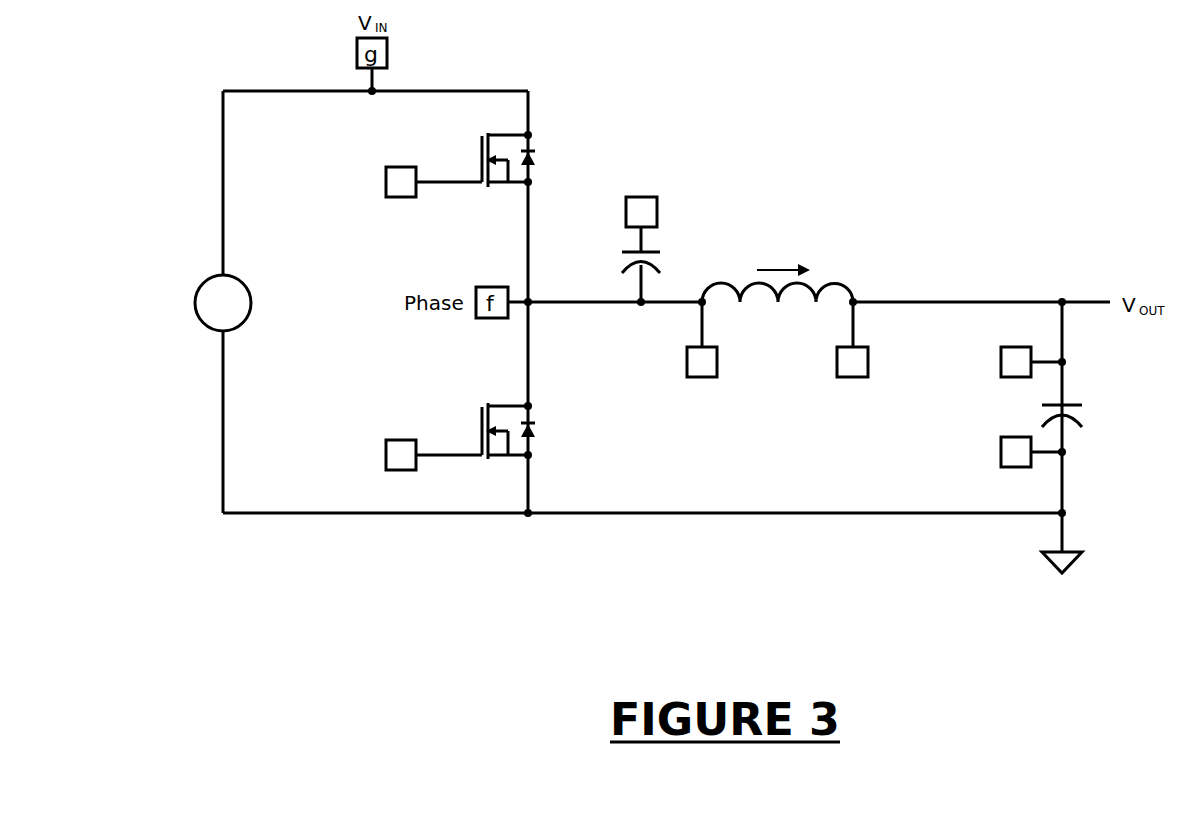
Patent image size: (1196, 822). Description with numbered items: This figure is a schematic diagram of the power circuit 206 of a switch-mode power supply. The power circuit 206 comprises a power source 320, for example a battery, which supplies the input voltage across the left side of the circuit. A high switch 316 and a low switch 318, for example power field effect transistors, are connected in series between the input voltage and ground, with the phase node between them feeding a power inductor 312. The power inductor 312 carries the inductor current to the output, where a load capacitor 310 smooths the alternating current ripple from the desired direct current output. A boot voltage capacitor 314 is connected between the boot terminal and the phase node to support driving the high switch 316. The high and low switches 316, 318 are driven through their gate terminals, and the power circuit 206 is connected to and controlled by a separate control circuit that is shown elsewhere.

The power circuit 206 is at (863, 110).
The load capacitor 310 is at (1075, 403).
The power inductor 312 is at (833, 281).
The boot voltage capacitor 314 is at (664, 263).
The high switch 316 is at (482, 158).
The low switch 318 is at (482, 431).
The power source 320 is at (250, 302).